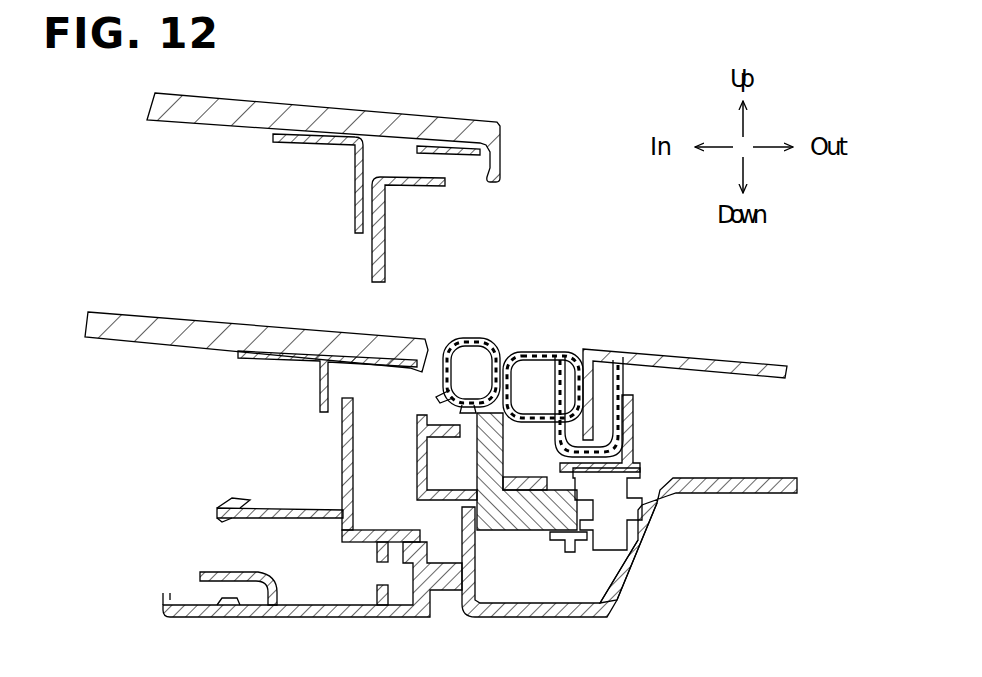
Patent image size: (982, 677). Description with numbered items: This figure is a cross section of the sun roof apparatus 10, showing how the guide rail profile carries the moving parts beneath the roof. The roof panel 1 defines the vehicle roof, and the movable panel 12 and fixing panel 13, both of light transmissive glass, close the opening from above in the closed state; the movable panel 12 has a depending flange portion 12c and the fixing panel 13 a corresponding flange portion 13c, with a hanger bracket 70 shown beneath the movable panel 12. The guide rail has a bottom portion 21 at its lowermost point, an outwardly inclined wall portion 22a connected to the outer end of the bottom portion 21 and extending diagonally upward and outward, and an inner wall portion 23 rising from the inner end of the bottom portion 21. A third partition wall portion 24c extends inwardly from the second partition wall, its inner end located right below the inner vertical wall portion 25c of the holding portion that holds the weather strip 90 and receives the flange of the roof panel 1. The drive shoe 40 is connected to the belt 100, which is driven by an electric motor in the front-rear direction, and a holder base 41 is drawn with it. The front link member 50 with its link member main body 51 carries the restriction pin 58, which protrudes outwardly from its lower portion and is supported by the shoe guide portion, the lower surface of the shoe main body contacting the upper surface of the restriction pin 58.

The roof panel 1 is at (683, 352).
The sun roof apparatus 10 is at (609, 86).
The movable panel 12 is at (307, 107).
The flange of movable panel 12c is at (355, 189).
The fixing panel 13 is at (189, 318).
The flange of fixed panel 13c is at (320, 393).
The bottom portion 21 is at (538, 617).
The outwardly inclined wall portion 22a is at (637, 574).
The inner wall portion 23 is at (448, 588).
The third partition wall portion 24c is at (588, 536).
The inner vertical wall portion 25c is at (637, 464).
The drive shoe 40 is at (455, 504).
The holder base 41 is at (513, 472).
The front link member 50 is at (381, 480).
The link member main body 51 is at (470, 462).
The restriction pin 58 is at (532, 533).
The hanger bracket 70 is at (372, 263).
The weather strip 90 is at (541, 347).
The belt 100 is at (466, 336).